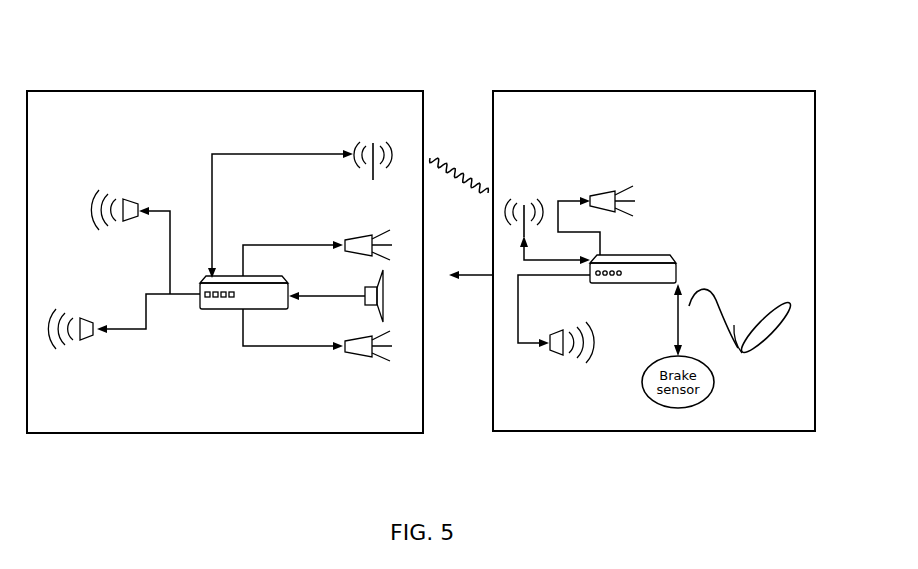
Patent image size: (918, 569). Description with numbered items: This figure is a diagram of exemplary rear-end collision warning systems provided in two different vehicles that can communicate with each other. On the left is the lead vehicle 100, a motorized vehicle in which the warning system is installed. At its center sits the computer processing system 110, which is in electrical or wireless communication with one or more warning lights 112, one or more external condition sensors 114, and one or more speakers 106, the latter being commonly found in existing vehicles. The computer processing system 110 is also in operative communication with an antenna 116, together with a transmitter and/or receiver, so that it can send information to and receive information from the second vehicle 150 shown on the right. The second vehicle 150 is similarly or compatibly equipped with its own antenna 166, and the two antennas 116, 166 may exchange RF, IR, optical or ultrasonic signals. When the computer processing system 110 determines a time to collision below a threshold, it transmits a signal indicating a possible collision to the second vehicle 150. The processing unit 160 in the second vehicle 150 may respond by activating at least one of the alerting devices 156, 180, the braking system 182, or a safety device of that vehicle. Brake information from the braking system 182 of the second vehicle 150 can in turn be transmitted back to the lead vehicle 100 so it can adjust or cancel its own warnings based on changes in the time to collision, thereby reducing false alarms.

The lead vehicle 100 is at (141, 64).
The speakers 106 is at (159, 192).
The computer processing system 110 is at (244, 293).
The warning lights 112 is at (347, 228).
The external condition sensors 114 is at (397, 310).
The antenna 116 is at (388, 124).
The second vehicle 150 is at (693, 74).
The alerting device 156 is at (583, 394).
The control unit 160 is at (633, 269).
The antenna 166 is at (547, 186).
The alerting device 180 is at (608, 178).
The braking system 182 is at (761, 406).